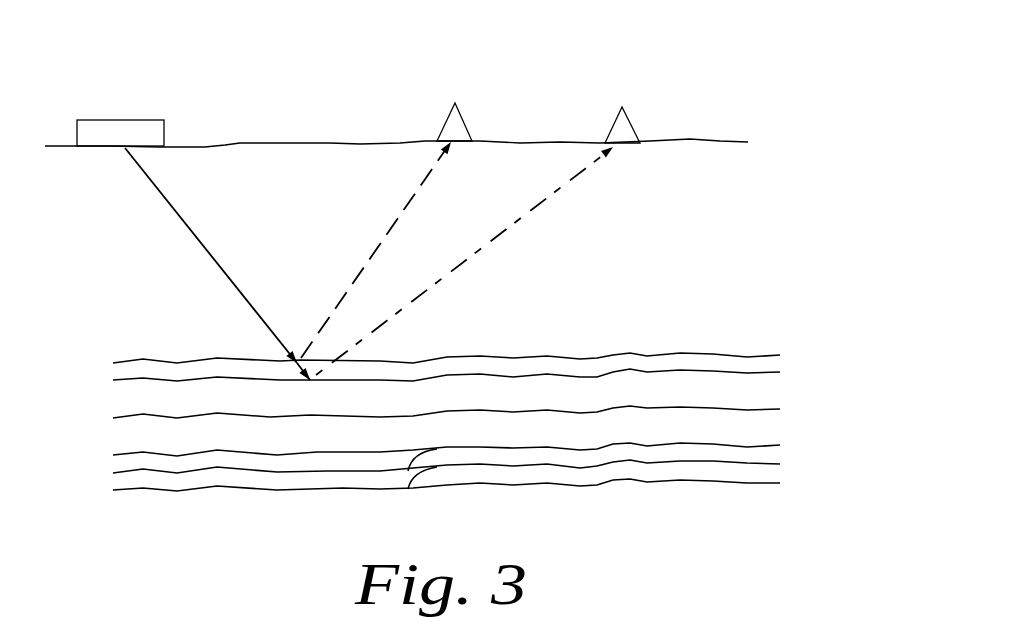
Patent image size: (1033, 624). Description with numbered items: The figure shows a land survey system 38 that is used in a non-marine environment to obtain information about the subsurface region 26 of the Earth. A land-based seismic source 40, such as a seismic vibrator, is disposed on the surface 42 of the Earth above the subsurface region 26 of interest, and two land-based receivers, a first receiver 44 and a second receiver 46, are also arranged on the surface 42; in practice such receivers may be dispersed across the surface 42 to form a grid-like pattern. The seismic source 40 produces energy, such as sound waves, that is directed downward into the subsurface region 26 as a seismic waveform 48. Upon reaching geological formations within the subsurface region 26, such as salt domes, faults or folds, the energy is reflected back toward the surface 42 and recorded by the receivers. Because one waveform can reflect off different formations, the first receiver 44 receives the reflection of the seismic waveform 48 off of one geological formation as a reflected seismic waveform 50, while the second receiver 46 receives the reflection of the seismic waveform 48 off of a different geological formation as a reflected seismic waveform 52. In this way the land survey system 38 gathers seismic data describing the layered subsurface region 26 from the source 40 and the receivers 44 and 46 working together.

The subsurface region 26 is at (95, 352).
The land survey system 38 is at (631, 34).
The land-based seismic source 40 is at (140, 119).
The surface 42 is at (328, 142).
The first receiver 44 is at (458, 111).
The second receiver 46 is at (628, 117).
The seismic waveform 48 is at (172, 203).
The reflected seismic waveform 50 is at (395, 222).
The reflected seismic waveform 52 is at (536, 207).